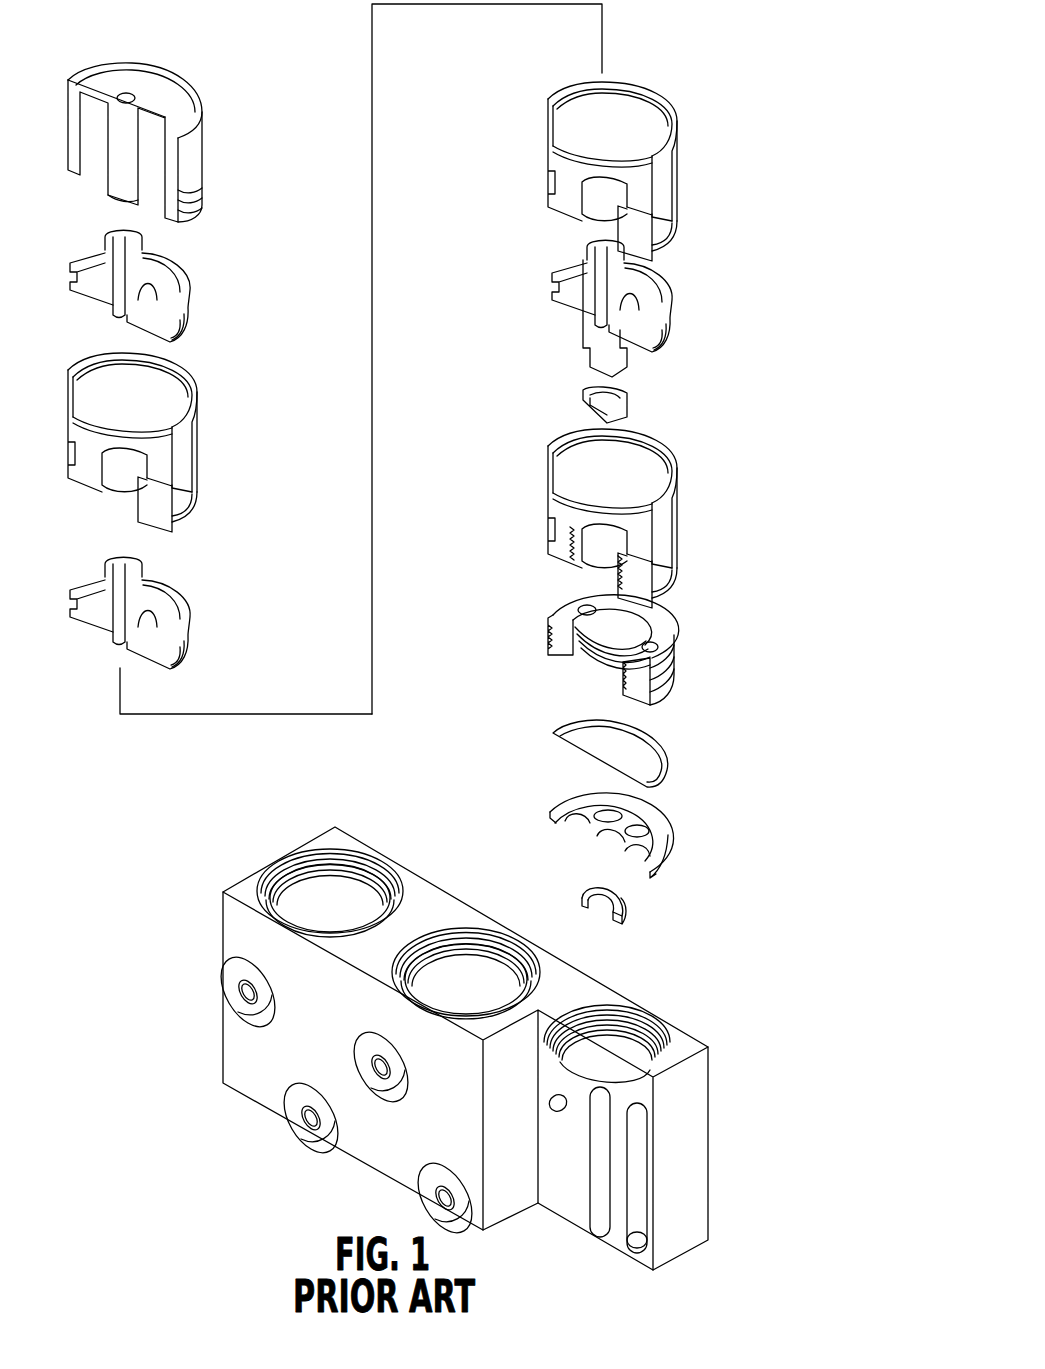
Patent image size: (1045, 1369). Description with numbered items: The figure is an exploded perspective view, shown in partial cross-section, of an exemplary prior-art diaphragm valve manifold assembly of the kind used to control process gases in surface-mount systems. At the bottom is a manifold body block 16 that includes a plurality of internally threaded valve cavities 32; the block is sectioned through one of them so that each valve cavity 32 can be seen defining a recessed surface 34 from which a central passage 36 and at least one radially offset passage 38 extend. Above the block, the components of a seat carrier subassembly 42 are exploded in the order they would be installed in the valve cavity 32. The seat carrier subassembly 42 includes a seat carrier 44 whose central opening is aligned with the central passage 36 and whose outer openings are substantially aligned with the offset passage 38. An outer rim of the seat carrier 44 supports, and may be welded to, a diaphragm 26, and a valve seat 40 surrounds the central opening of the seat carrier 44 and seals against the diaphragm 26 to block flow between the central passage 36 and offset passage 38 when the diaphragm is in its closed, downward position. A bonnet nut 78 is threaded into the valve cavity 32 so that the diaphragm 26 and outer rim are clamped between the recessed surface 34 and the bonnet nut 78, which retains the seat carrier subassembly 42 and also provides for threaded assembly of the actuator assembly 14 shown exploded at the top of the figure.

The actuator assembly 14 is at (705, 27).
The manifold body block 16 is at (491, 1039).
The diaphragm 26 is at (552, 708).
The valve cavity 32 is at (310, 903).
The recessed surface 34 is at (628, 1112).
The central passage 36 is at (627, 1100).
The radially offset passage 38 is at (630, 1125).
The valve seat 40 is at (580, 881).
The seat carrier subassembly 42 is at (621, 803).
The seat carrier 44 is at (543, 793).
The bonnet nut 78 is at (670, 630).